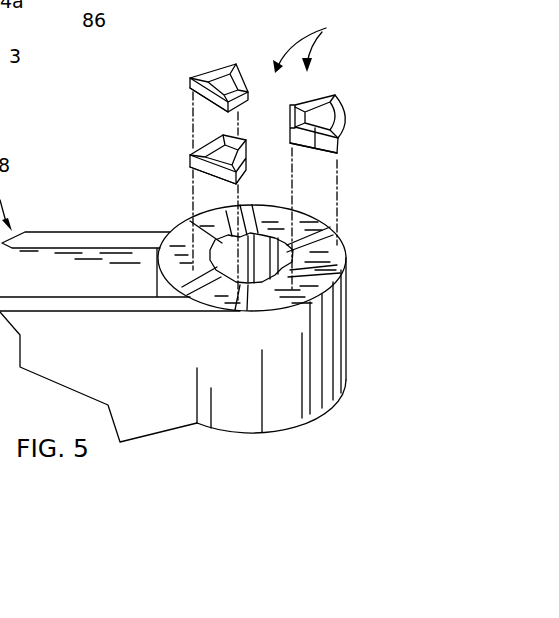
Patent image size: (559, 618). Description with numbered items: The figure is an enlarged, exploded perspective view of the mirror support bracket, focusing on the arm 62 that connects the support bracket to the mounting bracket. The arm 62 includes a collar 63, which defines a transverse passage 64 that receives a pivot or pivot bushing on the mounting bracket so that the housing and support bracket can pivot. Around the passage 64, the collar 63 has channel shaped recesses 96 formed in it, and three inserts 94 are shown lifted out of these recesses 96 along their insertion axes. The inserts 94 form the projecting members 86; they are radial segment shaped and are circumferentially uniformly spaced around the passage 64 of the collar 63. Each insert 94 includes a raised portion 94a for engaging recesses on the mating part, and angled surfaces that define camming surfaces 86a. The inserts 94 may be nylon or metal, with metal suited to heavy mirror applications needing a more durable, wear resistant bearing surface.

The arm 62 is at (72, 232).
The collar 63 is at (222, 433).
The transverse passage 64 is at (334, 278).
The projecting members 86 is at (315, 43).
The camming surfaces 86a is at (190, 78).
The inserts 94 is at (258, 111).
The raised portions 94a is at (213, 140).
The channel shaped recesses 96 is at (203, 213).